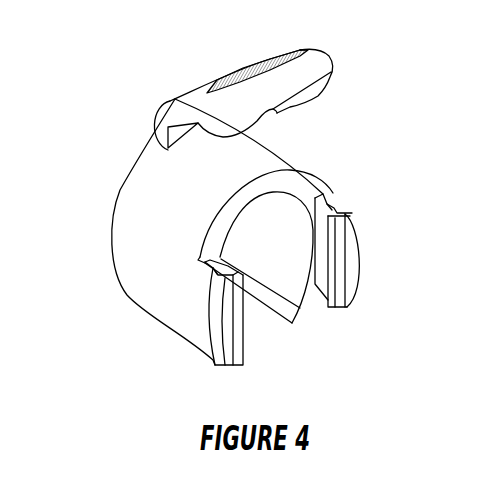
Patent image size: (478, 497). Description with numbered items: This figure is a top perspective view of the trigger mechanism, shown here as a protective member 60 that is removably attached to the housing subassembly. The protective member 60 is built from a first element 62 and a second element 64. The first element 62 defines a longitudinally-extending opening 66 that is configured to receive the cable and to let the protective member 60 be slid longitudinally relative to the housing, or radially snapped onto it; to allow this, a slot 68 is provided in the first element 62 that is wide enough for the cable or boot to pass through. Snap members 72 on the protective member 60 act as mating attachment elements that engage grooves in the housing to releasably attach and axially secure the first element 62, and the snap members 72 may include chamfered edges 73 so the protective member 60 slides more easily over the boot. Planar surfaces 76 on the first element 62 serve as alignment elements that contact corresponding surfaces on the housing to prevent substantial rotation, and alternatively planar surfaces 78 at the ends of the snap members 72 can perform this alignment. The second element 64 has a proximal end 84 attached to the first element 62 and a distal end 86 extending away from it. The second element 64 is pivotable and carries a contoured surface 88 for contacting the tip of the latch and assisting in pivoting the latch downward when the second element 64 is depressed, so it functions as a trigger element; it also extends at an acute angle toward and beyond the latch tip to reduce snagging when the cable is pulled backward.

The protective member 60 is at (347, 129).
The first element 62 is at (140, 290).
The second element 64 is at (190, 106).
The longitudinally-extending opening 66 is at (278, 245).
The slot 68 is at (253, 325).
The snap members 72 is at (338, 212).
The chamfered edges 73 is at (338, 282).
The planar surfaces 76 is at (338, 206).
The planar surfaces 78 is at (328, 257).
The proximal end 84 is at (168, 133).
The distal end 86 is at (325, 72).
The contoured surface 88 is at (240, 128).